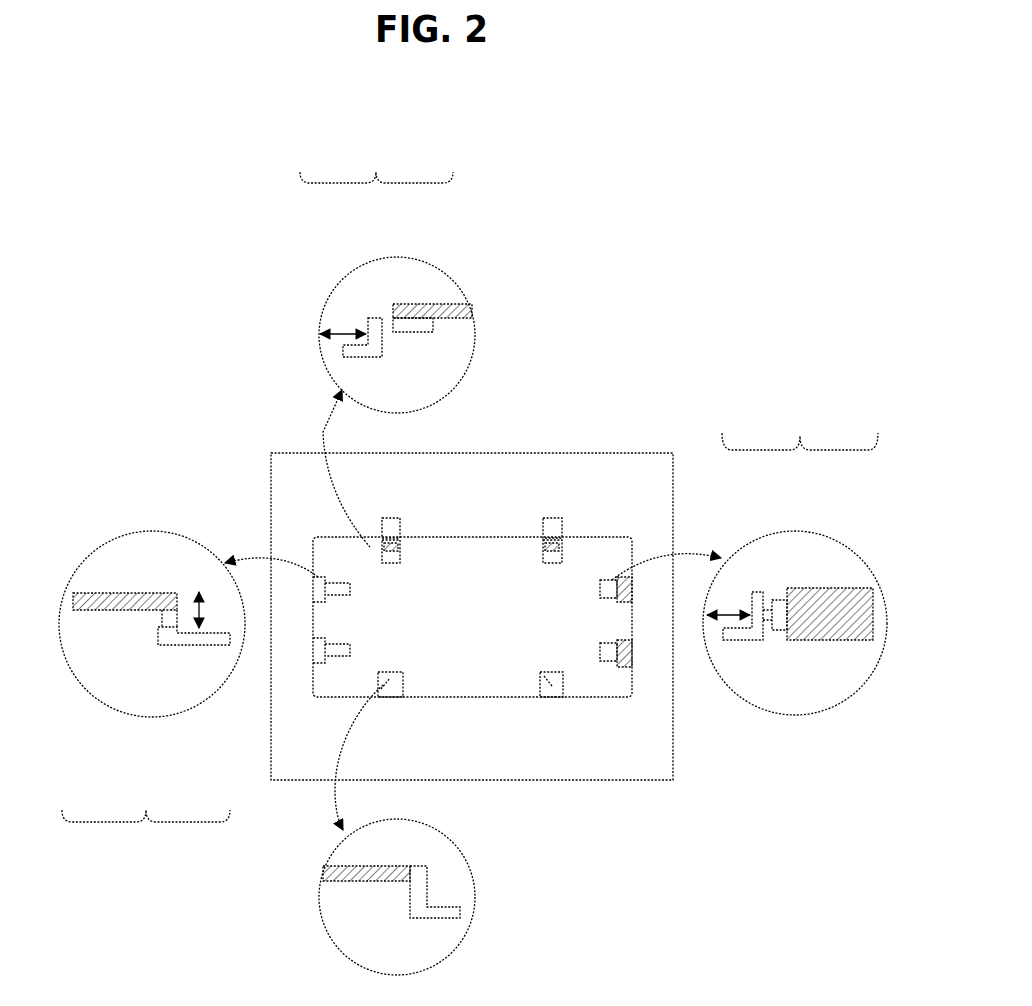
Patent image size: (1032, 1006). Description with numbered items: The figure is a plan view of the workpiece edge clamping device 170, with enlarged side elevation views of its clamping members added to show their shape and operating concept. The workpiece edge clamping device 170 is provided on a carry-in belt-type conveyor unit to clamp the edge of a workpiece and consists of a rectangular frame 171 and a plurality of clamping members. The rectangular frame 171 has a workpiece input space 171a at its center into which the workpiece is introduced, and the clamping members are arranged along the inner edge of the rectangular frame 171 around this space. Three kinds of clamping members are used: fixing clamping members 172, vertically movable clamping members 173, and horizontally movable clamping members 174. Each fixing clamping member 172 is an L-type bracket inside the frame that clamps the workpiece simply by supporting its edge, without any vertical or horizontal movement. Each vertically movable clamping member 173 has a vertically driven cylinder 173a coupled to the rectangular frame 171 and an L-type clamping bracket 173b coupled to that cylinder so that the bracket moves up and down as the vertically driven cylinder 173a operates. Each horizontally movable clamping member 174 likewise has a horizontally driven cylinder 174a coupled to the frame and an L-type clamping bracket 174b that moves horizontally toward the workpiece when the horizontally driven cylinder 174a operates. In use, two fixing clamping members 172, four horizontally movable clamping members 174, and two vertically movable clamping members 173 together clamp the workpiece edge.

The workpiece edge clamping device 170 is at (222, 373).
The rectangular frame 171 is at (592, 488).
The workpiece input space 171a is at (483, 603).
The fixing clamping member 172 is at (557, 697).
The vertically movable clamping member 173 is at (204, 704).
The vertically driven cylinder 173a is at (165, 601).
The L-type clamping bracket 173b is at (168, 637).
The horizontally movable clamping member 174 is at (590, 462).
The horizontally driven cylinder 174a is at (406, 315).
The L-type clamping bracket 174b is at (368, 325).